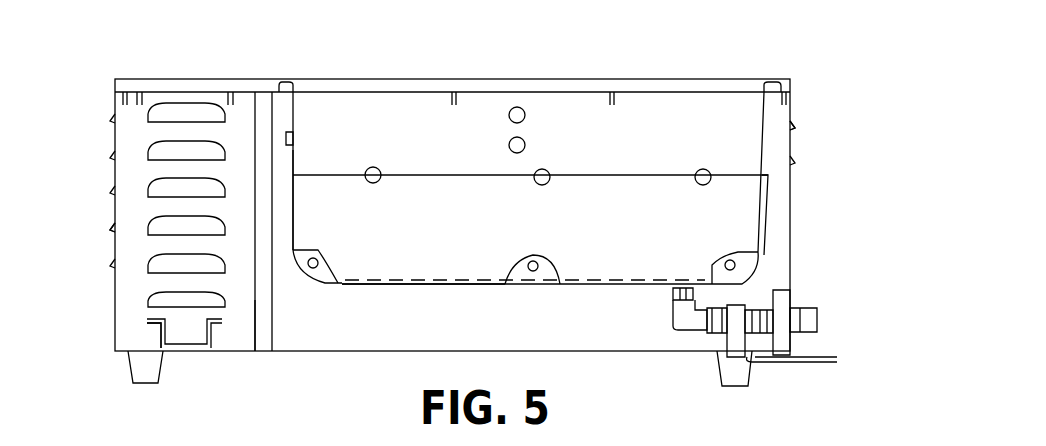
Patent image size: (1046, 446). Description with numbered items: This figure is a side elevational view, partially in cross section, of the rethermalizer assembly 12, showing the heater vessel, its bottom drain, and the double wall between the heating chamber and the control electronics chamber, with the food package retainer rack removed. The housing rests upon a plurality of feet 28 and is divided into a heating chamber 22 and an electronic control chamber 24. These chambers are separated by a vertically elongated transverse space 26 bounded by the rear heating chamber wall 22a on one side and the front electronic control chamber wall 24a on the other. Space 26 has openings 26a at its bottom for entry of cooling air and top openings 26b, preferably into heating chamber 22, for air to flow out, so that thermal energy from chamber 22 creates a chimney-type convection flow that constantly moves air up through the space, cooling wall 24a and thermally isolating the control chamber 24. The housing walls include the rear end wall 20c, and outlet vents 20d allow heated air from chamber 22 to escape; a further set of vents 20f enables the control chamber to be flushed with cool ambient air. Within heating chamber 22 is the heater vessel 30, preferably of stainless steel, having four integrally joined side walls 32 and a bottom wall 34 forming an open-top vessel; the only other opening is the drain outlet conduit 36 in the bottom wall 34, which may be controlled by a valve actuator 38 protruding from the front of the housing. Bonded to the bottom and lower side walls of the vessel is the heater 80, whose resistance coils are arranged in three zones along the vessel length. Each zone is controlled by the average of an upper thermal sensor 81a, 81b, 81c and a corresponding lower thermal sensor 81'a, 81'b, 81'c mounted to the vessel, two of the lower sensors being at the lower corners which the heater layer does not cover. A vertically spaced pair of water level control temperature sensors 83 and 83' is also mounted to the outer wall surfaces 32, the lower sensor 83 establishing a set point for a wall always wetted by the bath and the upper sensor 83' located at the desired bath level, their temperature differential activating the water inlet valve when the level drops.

The assembly 12 is at (762, 65).
The rear end wall 20c is at (115, 137).
The side wall tab 20f is at (115, 228).
The outlet vents 20d is at (793, 122).
The heating chamber 22 is at (387, 327).
The rear heating chamber wall 22a is at (280, 300).
The electronic control chamber 24 is at (230, 326).
The front electronic control chamber wall 24a is at (253, 323).
The transverse space 26 is at (264, 337).
The bottom openings 26a is at (256, 355).
The top openings 26b is at (293, 90).
The feet 28 is at (137, 368).
The heater vessel 30 is at (762, 252).
The side walls 32 is at (768, 215).
The bottom wall 34 is at (480, 283).
The drain outlet conduit 36 is at (673, 297).
The valve actuator 38 is at (817, 322).
The heater 80 is at (400, 285).
The upper thermal sensor 81a is at (381, 173).
The upper thermal sensor 81b is at (550, 174).
The upper thermal sensor 81c is at (718, 165).
The lower thermal sensor 81'a is at (338, 254).
The lower thermal sensor 81'b is at (566, 254).
The lower thermal sensor 81'c is at (710, 254).
The lower water level control temperature sensor 83 is at (545, 150).
The upper water level control temperature sensor 83' is at (437, 125).